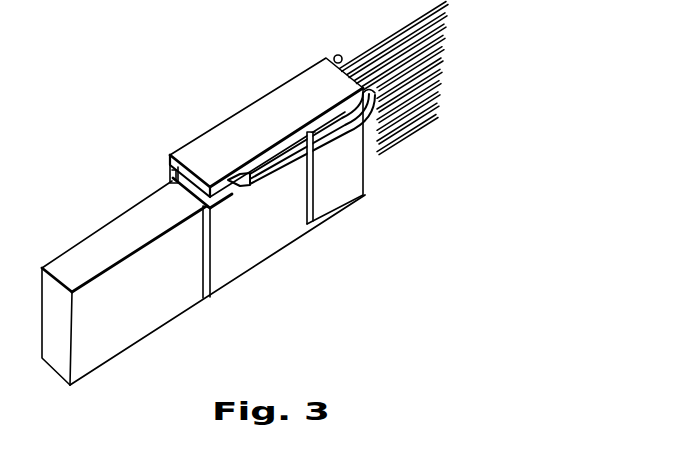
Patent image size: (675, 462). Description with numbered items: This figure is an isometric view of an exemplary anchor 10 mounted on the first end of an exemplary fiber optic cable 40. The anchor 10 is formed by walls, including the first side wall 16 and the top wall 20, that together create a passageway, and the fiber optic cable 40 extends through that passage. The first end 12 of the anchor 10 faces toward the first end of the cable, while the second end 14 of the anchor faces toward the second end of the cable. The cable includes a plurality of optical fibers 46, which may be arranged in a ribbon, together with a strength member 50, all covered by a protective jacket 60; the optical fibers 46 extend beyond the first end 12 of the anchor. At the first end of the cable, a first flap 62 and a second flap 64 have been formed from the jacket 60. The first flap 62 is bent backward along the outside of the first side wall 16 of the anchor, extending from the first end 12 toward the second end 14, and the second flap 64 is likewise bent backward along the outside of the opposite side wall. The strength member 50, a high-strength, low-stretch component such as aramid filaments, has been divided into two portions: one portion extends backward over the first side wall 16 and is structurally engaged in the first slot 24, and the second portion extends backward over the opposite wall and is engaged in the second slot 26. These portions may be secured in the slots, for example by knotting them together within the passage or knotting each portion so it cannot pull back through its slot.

The anchor 10 is at (304, 171).
The first end 12 is at (374, 197).
The second end 14 is at (242, 259).
The first side wall 16 is at (228, 260).
The top wall 20 is at (233, 98).
The first slot 24 is at (229, 190).
The second slot 26 is at (176, 170).
The fiber optic cable 40 is at (203, 290).
The optical fibers 46 is at (447, 2).
The strength member 50 is at (300, 193).
The protective jacket 60 is at (123, 329).
The first flap 62 is at (342, 186).
The second flap 64 is at (333, 54).